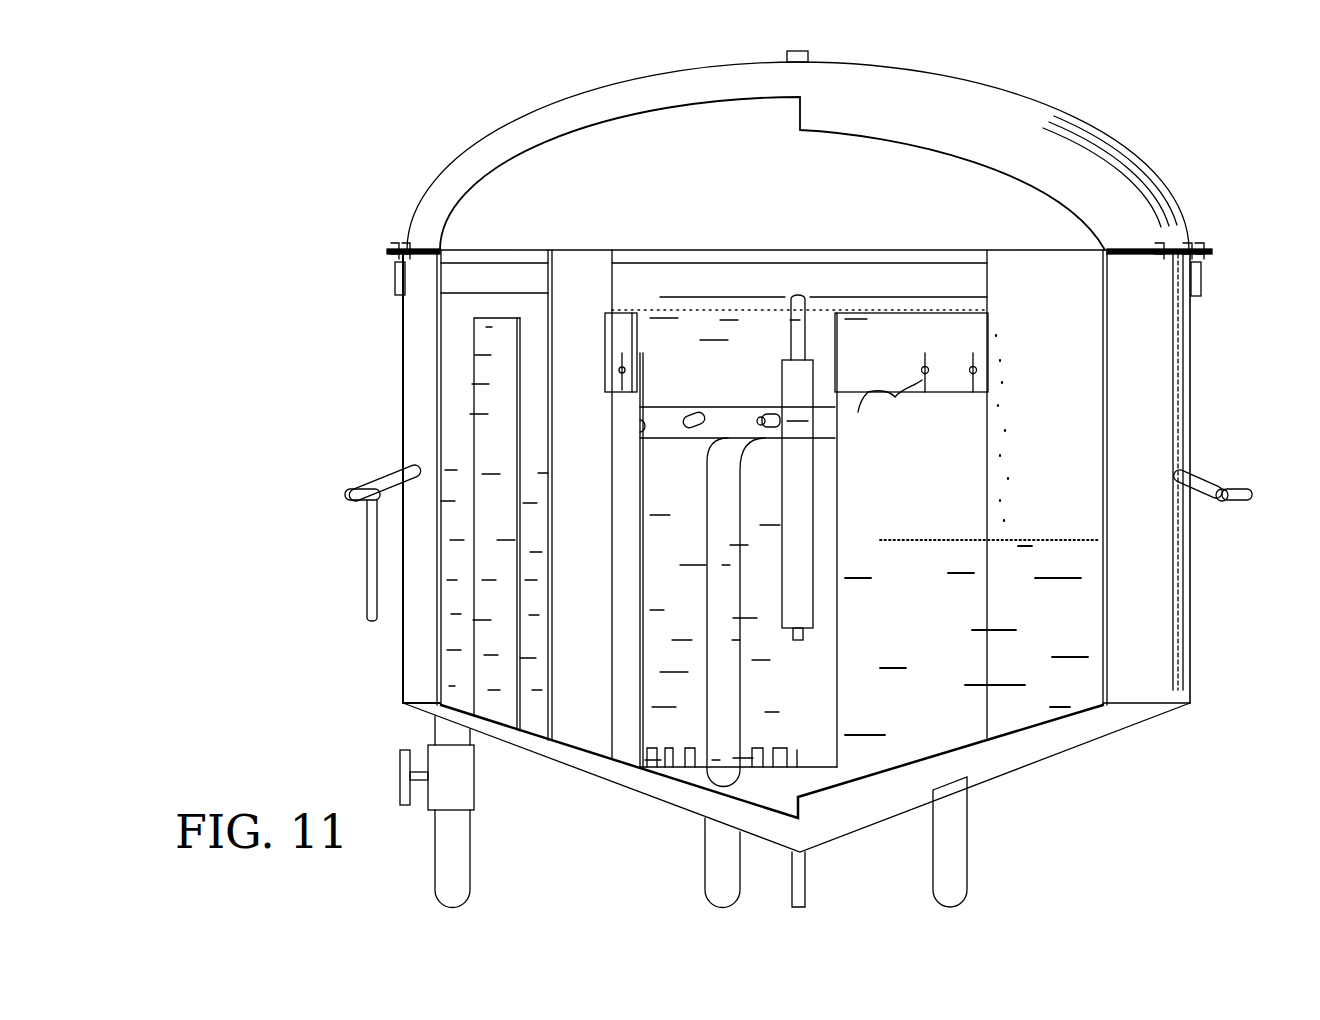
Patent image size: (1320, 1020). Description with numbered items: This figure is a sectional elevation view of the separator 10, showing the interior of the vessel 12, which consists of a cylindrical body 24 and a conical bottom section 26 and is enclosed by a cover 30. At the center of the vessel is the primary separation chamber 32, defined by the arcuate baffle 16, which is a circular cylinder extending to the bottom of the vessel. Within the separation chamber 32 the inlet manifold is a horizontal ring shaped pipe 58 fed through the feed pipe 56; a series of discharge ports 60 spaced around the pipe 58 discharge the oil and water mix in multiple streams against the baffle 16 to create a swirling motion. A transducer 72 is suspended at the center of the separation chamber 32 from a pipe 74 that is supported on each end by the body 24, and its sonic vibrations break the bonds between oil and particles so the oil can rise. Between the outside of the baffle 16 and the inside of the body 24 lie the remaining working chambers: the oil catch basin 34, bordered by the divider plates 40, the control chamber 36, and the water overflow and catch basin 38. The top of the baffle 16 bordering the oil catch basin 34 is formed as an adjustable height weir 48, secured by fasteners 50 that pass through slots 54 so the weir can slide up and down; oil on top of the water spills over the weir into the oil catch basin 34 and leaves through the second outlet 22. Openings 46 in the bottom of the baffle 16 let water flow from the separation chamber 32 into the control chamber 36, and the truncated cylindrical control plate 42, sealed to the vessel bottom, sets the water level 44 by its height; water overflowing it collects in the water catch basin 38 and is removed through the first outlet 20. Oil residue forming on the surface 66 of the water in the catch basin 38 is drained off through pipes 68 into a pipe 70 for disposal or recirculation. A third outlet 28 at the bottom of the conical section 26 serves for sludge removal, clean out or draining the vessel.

The separator 10 is at (350, 120).
The vessel 12 is at (383, 387).
The arcuate baffle 16 is at (640, 594).
The first outlet 20 is at (470, 846).
The second outlet 22 is at (964, 858).
The cylindrical body 24 is at (405, 306).
The conical bottom section 26 is at (1118, 725).
The third outlet 28 is at (806, 880).
The cover 30 is at (1030, 102).
The separation chamber 32 is at (664, 550).
The oil catch basin 34 is at (1033, 510).
The control chamber 36 is at (530, 520).
The water overflow and catch basin 38 is at (453, 620).
The divider plates 40 is at (577, 263).
The control plate 42 is at (493, 318).
The water level 44 is at (538, 318).
The openings 46 is at (760, 770).
The adjustable height weir 48 is at (625, 315).
The fasteners 50 is at (926, 372).
The slots 54 is at (860, 395).
The feed pipe 56 is at (708, 856).
The ring shaped pipe 58 is at (667, 437).
The discharge ports 60 is at (685, 410).
The surface 66 is at (494, 470).
The pipes 68 is at (390, 480).
The pipe 70 is at (345, 493).
The transducer 72 is at (786, 580).
The pipe 74 is at (700, 275).